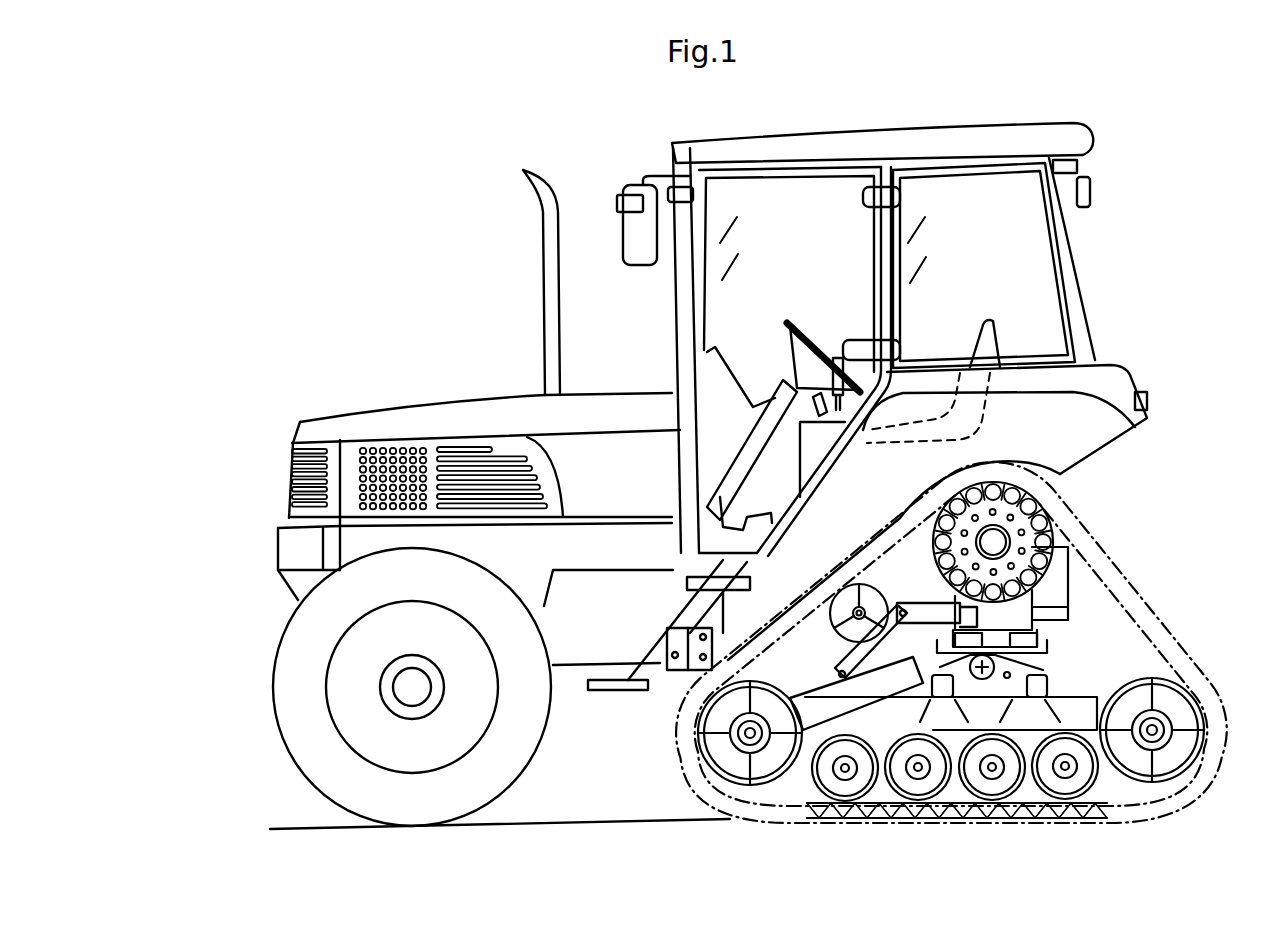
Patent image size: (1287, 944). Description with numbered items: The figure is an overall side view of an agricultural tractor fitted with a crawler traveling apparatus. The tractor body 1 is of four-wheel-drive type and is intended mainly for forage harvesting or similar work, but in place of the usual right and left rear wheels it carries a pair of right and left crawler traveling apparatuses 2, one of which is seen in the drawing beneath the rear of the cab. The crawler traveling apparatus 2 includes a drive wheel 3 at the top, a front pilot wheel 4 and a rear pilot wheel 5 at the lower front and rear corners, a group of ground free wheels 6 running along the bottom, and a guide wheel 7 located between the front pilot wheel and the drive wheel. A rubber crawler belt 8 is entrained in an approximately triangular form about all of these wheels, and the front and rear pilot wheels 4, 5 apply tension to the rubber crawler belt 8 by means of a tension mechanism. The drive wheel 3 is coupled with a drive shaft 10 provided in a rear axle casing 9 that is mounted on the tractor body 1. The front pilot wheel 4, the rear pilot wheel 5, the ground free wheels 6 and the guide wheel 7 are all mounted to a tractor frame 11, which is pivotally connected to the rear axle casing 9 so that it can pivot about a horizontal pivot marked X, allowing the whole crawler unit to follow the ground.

The body 1 is at (437, 395).
The crawler traveling apparatus 2 is at (1117, 560).
The drive wheel 3 is at (1003, 495).
The front pilot wheel 4 is at (713, 748).
The rear pilot wheel 5 is at (1180, 753).
The ground free wheels 6 is at (910, 790).
The guide wheel 7 is at (848, 598).
The rubber crawler belt 8 is at (965, 825).
The rear axle casing 9 is at (1023, 610).
The drive shaft 10 is at (988, 543).
The tractor frame 11 is at (1073, 697).